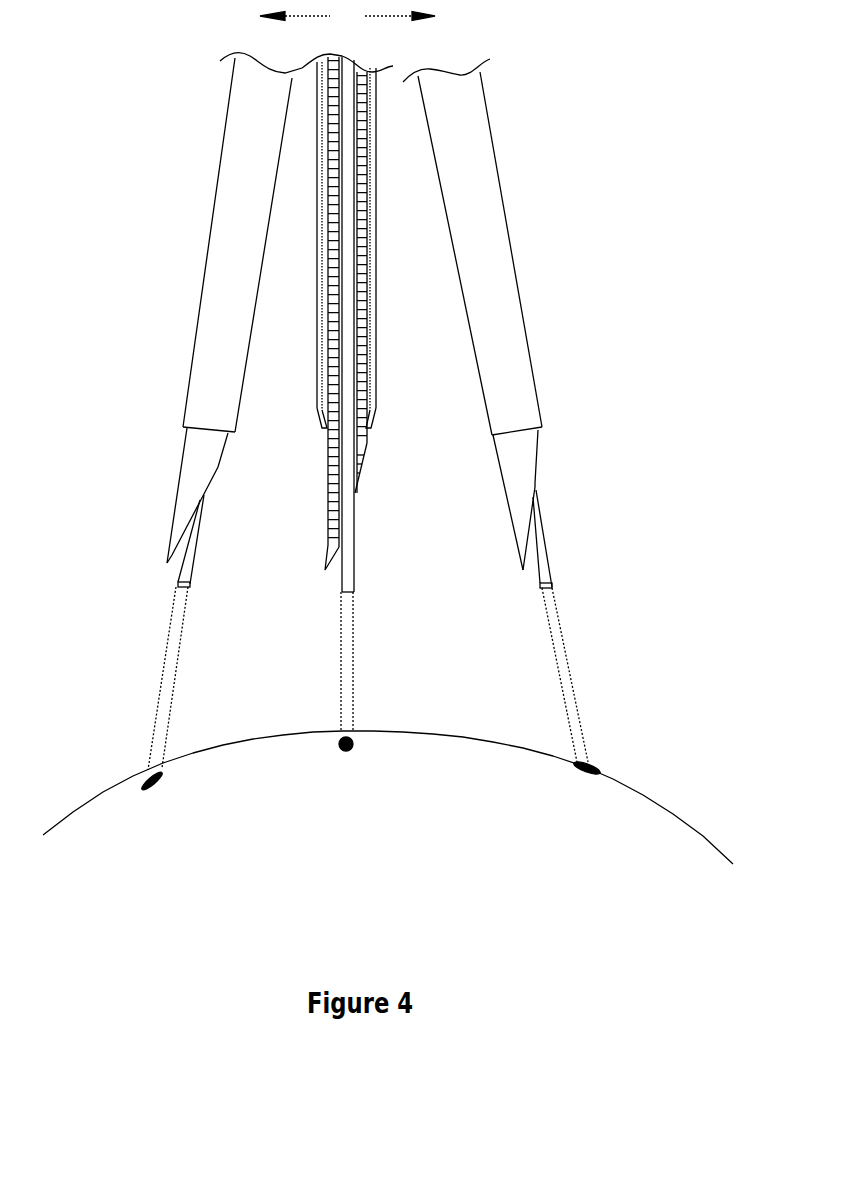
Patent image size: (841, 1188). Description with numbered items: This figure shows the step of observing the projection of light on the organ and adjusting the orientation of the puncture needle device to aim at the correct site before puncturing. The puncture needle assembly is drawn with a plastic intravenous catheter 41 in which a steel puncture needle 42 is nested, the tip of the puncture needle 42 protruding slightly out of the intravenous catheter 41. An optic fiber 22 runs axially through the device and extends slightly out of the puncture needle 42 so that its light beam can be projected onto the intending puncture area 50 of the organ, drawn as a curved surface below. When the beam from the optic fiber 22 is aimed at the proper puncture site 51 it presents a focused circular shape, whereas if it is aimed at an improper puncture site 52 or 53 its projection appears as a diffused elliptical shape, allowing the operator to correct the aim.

The intravenous catheter 41 is at (377, 343).
The puncture needle 42 is at (368, 442).
The optic fiber 22 is at (343, 552).
The intending puncture area 50 is at (687, 834).
The proper puncture site 51 is at (348, 734).
The improper puncture site 52 is at (588, 763).
The improper puncture site 53 is at (147, 776).